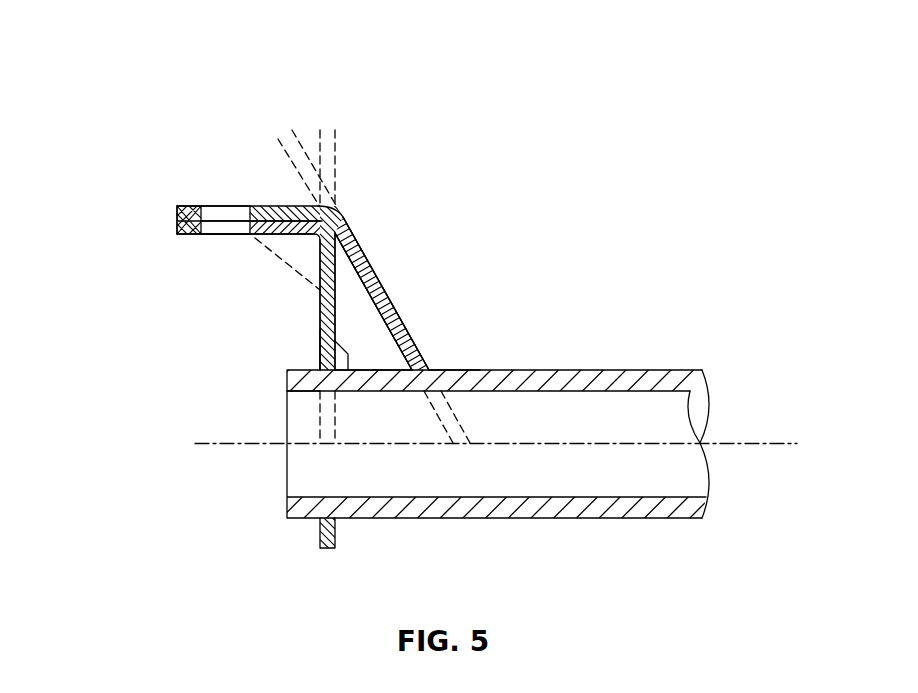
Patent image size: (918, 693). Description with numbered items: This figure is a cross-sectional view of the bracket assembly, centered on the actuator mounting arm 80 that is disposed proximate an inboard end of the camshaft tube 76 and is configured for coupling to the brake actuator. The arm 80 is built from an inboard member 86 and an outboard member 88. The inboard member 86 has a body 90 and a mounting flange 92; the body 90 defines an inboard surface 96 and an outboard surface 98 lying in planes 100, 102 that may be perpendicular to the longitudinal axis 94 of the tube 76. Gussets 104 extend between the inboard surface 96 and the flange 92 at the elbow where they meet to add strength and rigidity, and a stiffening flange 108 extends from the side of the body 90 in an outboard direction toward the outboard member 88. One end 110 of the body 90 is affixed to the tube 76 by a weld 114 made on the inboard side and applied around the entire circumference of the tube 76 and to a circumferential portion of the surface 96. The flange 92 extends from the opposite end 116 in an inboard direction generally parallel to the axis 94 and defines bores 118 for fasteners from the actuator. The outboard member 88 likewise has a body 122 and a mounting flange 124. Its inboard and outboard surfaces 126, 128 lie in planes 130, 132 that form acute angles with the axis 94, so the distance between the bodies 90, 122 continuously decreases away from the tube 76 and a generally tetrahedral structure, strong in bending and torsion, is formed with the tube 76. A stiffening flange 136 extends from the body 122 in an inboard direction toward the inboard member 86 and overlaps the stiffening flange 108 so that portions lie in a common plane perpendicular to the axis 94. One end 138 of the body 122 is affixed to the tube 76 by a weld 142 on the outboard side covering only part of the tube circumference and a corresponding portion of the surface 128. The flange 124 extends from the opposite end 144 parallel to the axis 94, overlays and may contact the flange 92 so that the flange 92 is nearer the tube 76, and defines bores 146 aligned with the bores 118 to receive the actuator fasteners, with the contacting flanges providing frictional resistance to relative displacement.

The camshaft tube 76 is at (665, 508).
The actuator mounting arm 80 is at (408, 215).
The inboard member 86 is at (251, 308).
The outboard member 88 is at (445, 290).
The body 90 is at (320, 313).
The mounting flange 92 is at (178, 227).
The longitudinal axis 94 is at (780, 444).
The inboard surface 96 is at (320, 338).
The outboard surface 98 is at (337, 339).
The plane 100 is at (320, 150).
The plane 102 is at (336, 153).
The gusset 104 is at (302, 264).
The stiffening flange 108 is at (348, 372).
The end 110 is at (316, 562).
The weld 114 is at (318, 520).
The end 116 is at (305, 246).
The bore 118 is at (208, 235).
The body 122 is at (390, 303).
The mounting flange 124 is at (178, 215).
The inboard surface 126 is at (380, 372).
The outboard surface 128 is at (407, 331).
The plane 130 is at (298, 166).
The plane 132 is at (297, 150).
The stiffening flange 136 is at (344, 291).
The end 138 is at (440, 343).
The weld 142 is at (478, 372).
The end 144 is at (355, 205).
The bore 146 is at (218, 212).